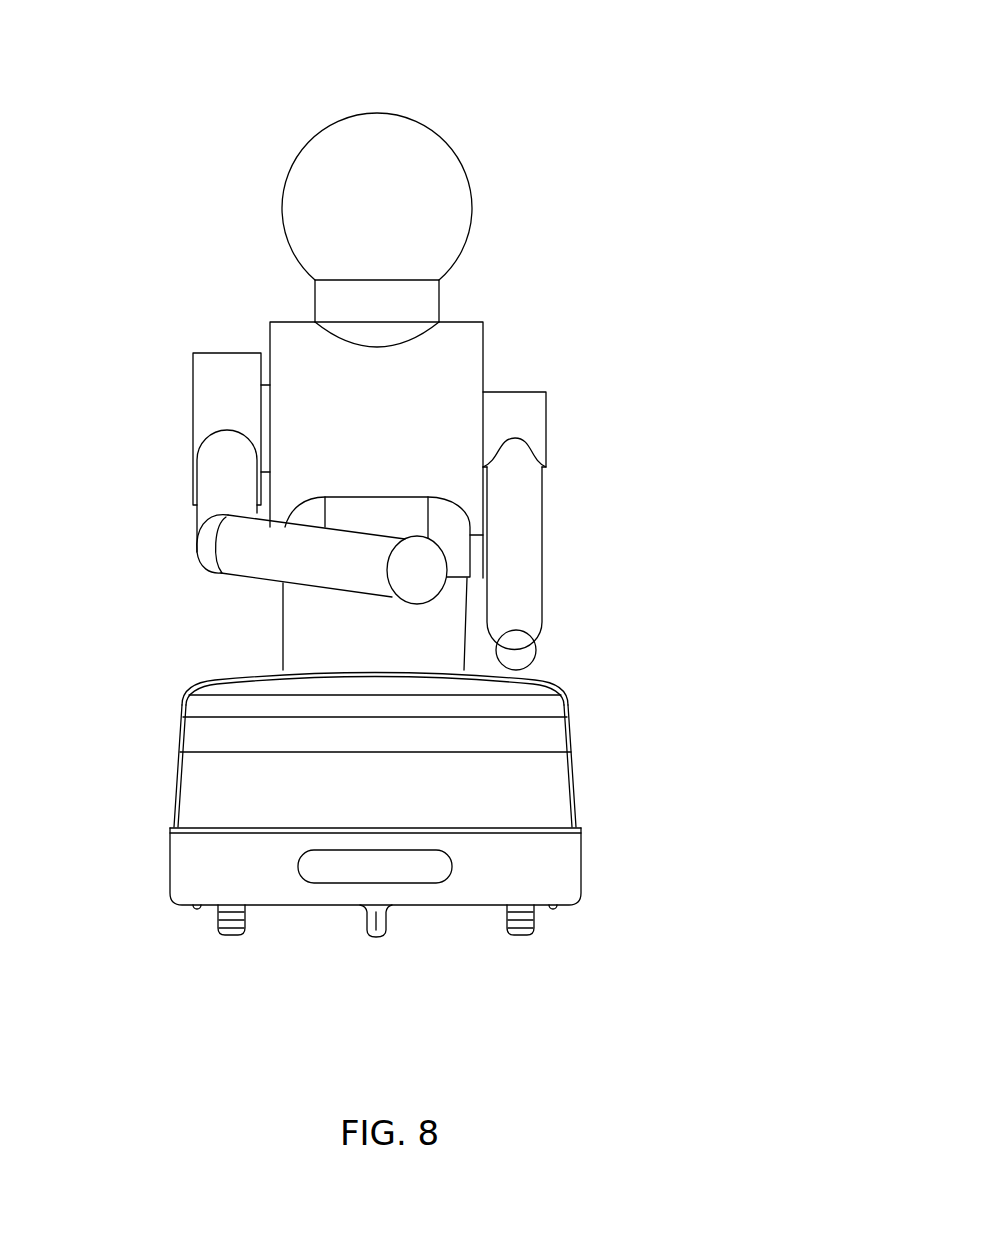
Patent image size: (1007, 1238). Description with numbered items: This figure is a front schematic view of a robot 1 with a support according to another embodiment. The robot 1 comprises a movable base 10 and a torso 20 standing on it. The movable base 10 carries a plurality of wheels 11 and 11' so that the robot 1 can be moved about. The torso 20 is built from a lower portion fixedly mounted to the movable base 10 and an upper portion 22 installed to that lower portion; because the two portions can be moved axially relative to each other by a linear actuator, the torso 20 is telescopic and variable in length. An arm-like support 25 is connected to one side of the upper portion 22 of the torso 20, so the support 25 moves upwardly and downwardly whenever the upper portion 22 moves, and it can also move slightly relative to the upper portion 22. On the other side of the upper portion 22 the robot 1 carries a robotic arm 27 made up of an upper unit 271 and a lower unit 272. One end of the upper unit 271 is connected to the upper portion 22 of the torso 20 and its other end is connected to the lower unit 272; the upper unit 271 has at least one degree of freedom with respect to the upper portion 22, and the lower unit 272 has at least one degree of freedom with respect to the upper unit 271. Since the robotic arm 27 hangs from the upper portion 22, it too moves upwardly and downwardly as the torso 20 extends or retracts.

The robot 1 is at (592, 157).
The torso 20 is at (526, 368).
The upper portion 22 is at (440, 367).
The support 25 is at (520, 643).
The robotic arm 27 is at (172, 463).
The upper unit 271 is at (217, 495).
The lower unit 272 is at (275, 553).
The movable base 10 is at (553, 793).
The wheels 11 is at (408, 947).
The wheel 11' is at (409, 943).